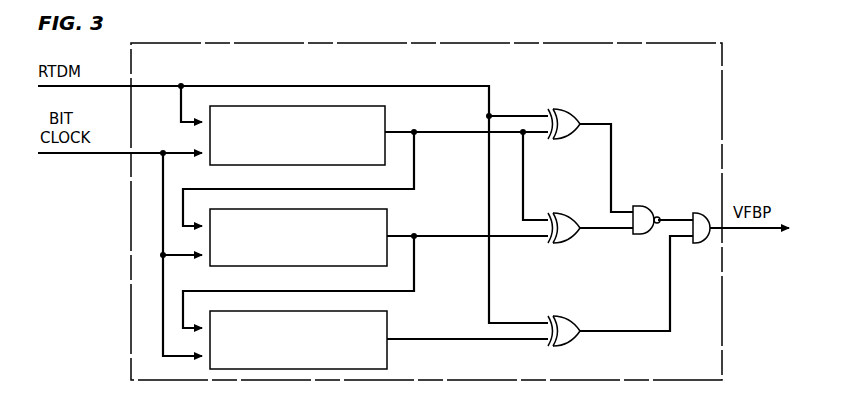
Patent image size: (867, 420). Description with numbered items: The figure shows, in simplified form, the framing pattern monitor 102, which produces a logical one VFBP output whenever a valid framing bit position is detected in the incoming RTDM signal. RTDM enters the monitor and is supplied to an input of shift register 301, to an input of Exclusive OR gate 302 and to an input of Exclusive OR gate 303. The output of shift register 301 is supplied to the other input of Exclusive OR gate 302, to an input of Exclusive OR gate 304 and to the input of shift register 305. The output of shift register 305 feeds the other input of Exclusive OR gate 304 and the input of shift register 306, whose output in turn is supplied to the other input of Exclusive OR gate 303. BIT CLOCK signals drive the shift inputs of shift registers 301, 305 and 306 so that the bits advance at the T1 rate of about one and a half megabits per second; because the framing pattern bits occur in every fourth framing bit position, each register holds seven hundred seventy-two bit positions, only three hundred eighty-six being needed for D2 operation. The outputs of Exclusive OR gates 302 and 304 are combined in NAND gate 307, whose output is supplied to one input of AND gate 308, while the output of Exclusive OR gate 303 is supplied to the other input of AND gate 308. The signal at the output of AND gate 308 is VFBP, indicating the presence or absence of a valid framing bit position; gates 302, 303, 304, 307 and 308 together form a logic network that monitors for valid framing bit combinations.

The framing pattern monitor 102 is at (657, 43).
The shift register 301 is at (387, 114).
The Exclusive OR gate 302 is at (565, 112).
The Exclusive OR gate 303 is at (563, 318).
The Exclusive OR gate 304 is at (560, 215).
The shift register 305 is at (389, 217).
The shift register 306 is at (389, 322).
The NAND gate 307 is at (641, 206).
The AND gate 308 is at (701, 242).